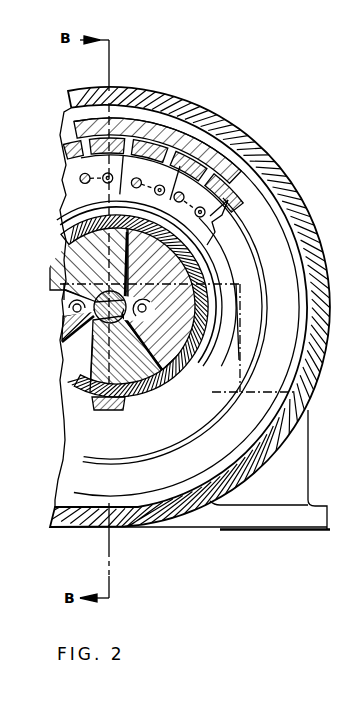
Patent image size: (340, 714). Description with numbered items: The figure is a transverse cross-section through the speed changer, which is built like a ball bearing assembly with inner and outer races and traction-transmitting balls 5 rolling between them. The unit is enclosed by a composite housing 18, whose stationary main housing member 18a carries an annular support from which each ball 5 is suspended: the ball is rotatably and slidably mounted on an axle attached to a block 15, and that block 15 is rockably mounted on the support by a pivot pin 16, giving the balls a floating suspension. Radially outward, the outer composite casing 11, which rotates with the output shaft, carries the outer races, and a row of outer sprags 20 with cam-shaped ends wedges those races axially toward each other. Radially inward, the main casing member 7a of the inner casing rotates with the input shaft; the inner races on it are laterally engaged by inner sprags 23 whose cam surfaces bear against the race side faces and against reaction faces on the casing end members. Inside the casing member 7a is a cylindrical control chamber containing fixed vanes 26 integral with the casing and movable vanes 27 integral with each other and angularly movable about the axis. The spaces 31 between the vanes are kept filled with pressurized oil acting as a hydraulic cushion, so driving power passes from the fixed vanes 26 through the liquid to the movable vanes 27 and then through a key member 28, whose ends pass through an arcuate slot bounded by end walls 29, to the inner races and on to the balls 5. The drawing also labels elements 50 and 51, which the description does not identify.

The main housing member 18a is at (150, 93).
The composite casing 11 is at (182, 137).
The outer sprags 20 is at (222, 148).
The composite housing 18 is at (298, 468).
The block 15 is at (78, 192).
The pivot pin 16 is at (80, 176).
The traction-transmitting balls 5 is at (137, 177).
The inner sprags 23 is at (70, 210).
The end walls 29 is at (68, 230).
The key member 28 is at (72, 258).
The movable vanes 27 is at (104, 305).
The fixed vanes 26 is at (63, 342).
The seat 51 is at (70, 306).
The hole 50 is at (73, 312).
The spaces 31 is at (66, 283).
The main casing member 7a is at (204, 273).